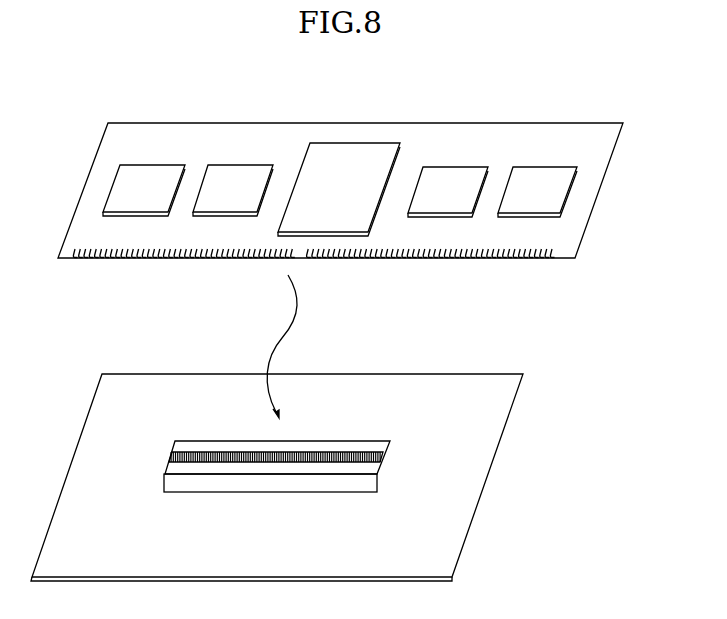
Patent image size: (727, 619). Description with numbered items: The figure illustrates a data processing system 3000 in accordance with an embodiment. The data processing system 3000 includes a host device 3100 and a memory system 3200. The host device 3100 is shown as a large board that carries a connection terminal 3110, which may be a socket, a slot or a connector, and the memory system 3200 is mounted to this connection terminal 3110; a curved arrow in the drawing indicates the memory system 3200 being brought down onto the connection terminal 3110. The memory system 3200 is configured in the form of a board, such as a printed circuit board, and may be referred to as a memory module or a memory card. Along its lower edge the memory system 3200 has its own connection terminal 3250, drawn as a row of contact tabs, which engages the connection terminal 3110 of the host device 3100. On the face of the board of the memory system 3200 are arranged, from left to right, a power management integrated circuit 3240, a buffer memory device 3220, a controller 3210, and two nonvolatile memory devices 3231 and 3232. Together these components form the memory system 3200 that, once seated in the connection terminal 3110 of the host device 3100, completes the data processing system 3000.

The data processing system 3000 is at (200, 91).
The memory system 3200 is at (340, 190).
The power management integrated circuit 3240 is at (144, 190).
The buffer memory device 3220 is at (233, 190).
The controller 3210 is at (339, 189).
The nonvolatile memory device 3231 is at (448, 192).
The nonvolatile memory device 3232 is at (537, 192).
The connection terminal 3250 is at (92, 258).
The host device 3100 is at (277, 477).
The connection terminal 3110 is at (409, 435).